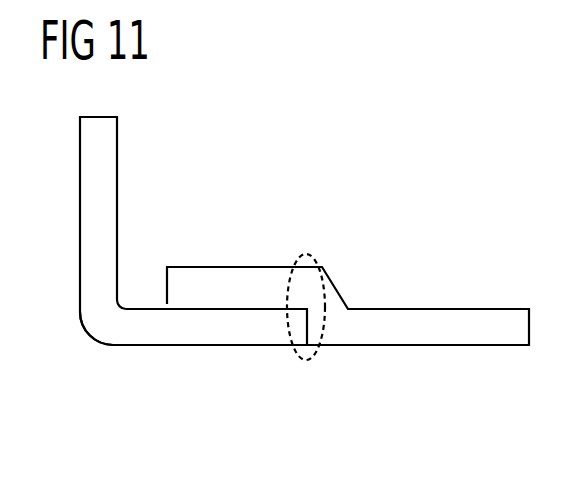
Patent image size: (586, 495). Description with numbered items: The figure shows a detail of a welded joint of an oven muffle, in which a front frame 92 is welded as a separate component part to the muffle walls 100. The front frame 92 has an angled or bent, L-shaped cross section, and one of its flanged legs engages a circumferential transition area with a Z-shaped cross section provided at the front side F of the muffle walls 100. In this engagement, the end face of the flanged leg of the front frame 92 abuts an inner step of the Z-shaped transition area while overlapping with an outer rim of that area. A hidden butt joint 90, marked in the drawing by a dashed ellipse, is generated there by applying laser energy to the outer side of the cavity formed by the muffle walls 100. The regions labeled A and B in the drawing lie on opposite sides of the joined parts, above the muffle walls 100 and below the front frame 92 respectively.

The hidden butt joint 90 is at (305, 255).
The front frame 92 is at (98, 326).
The muffle walls 100 is at (428, 322).
The front side F is at (52, 229).
The region A is at (232, 230).
The region B is at (232, 416).